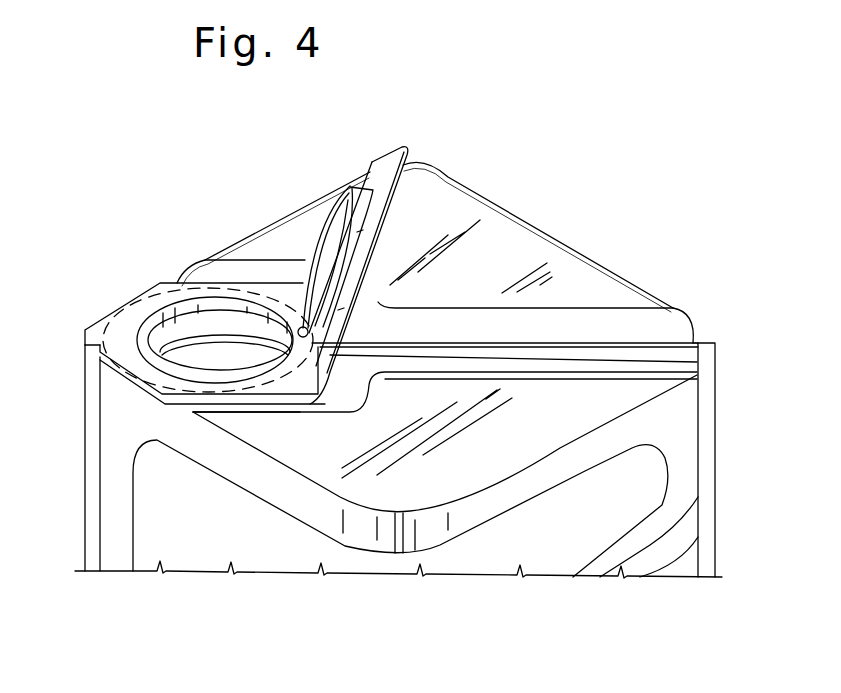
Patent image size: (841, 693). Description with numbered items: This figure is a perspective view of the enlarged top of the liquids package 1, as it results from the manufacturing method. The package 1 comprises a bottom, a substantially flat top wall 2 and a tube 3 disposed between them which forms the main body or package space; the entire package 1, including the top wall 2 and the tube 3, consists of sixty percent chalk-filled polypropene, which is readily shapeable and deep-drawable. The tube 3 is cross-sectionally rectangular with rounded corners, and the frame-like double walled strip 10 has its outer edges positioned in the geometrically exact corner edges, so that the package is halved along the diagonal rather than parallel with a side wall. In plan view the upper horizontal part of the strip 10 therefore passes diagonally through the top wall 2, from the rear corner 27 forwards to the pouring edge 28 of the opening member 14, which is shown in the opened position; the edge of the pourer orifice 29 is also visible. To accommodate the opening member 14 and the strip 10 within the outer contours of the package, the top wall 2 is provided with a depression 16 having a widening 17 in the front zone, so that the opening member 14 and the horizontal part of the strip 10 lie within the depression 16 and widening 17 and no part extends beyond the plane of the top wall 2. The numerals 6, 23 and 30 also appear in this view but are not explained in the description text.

The package 1 is at (726, 489).
The top wall 2 is at (468, 220).
The tube 3 is at (155, 483).
The corner post 6 is at (100, 442).
The double walled strip 10 is at (583, 348).
The opening member 14 is at (410, 196).
The depression 16 is at (662, 325).
The widening 17 is at (343, 402).
The lid 23 is at (387, 150).
The rear corner 27 is at (335, 227).
The pouring edge 28 is at (85, 333).
The edge of the pourer orifice 29 is at (255, 338).
The sealing ring 30 is at (132, 310).